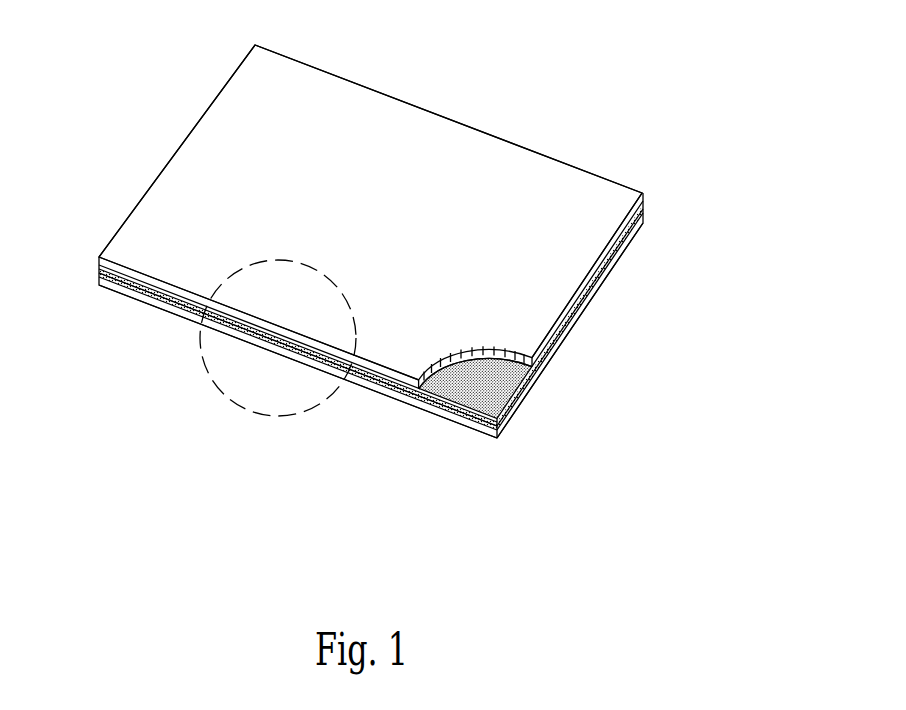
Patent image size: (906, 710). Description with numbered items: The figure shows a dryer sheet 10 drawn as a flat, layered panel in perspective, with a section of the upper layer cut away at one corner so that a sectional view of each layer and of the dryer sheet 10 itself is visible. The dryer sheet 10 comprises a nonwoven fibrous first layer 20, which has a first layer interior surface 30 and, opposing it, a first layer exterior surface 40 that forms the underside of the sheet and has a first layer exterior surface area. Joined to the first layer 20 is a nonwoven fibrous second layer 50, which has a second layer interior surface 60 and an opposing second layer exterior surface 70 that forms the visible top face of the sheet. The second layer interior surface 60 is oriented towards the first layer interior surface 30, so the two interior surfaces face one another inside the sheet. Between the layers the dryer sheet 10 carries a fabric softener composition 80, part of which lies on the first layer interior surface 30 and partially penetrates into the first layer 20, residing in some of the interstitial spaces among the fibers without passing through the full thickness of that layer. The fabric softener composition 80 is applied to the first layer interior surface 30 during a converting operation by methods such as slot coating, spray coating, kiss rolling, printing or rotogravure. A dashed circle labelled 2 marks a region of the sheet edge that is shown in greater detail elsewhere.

The dryer sheet 10 is at (538, 97).
The first layer 20 is at (622, 257).
The first layer interior surface 30 is at (528, 388).
The first layer exterior surface 40 is at (412, 408).
The second layer 50 is at (643, 200).
The second layer interior surface 60 is at (448, 408).
The second layer exterior surface 70 is at (578, 205).
The fabric softener composition 80 is at (168, 300).
The detail region of FIG. 2 is at (237, 402).